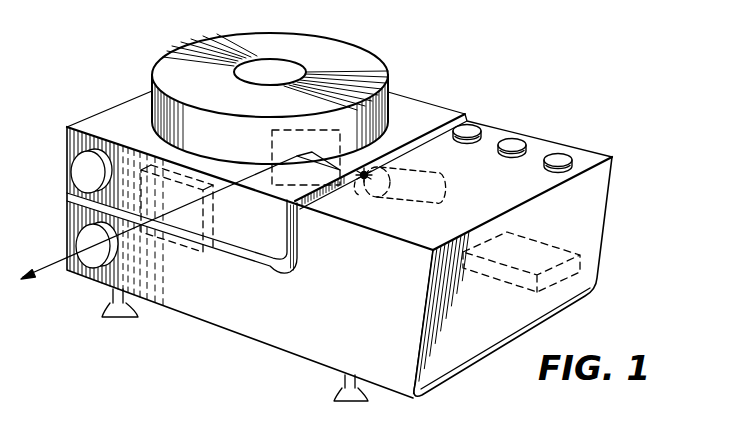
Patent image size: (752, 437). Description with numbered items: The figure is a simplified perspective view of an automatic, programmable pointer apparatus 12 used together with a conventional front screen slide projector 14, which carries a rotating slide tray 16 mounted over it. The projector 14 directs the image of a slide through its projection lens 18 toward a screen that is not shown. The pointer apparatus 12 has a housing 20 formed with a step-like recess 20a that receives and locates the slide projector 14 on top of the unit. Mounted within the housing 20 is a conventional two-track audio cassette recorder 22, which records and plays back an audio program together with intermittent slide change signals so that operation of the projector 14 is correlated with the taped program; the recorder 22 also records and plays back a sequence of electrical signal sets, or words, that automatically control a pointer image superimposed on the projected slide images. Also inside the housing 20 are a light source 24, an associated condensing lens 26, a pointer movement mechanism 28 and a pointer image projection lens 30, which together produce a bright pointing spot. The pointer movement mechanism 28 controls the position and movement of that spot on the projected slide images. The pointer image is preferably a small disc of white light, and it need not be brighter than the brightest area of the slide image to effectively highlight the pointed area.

The automatic, programmable pointer apparatus 12 is at (632, 189).
The front screen slide projector 14 is at (134, 98).
The rotating slide tray 16 is at (382, 65).
The projection lens 18 is at (72, 173).
The housing 20 is at (480, 346).
The step-like recess 20a is at (258, 256).
The two-track audio cassette recorder 22 is at (582, 262).
The light source 24 is at (441, 189).
The condensing lens 26 is at (407, 162).
The pointer movement mechanism 28 is at (147, 167).
The pointer image projection lens 30 is at (77, 243).